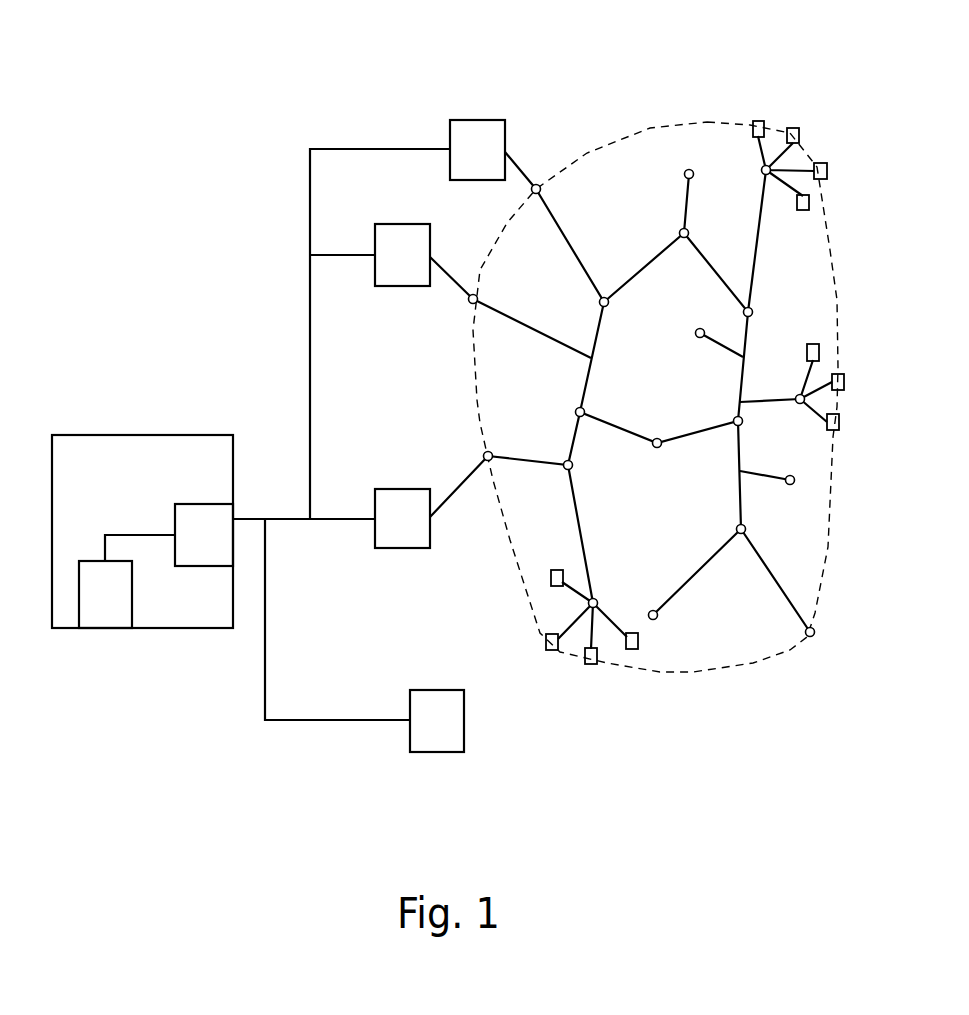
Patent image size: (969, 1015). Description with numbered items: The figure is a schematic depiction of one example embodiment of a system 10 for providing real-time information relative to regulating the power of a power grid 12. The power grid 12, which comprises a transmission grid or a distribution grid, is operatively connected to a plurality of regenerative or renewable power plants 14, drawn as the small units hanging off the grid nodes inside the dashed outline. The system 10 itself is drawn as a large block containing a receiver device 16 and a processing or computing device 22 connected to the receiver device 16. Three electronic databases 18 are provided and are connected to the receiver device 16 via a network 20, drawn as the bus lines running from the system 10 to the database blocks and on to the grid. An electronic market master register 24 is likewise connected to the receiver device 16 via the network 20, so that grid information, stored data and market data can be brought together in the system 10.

The system 10 is at (92, 412).
The power grid 12 is at (647, 104).
The regenerative or renewable power plants 14 is at (793, 128).
The receiver device 16 is at (203, 540).
The electronic databases 18 is at (477, 148).
The network 20 is at (287, 520).
The processing or computing device 22 is at (106, 610).
The electronic market master register 24 is at (435, 733).